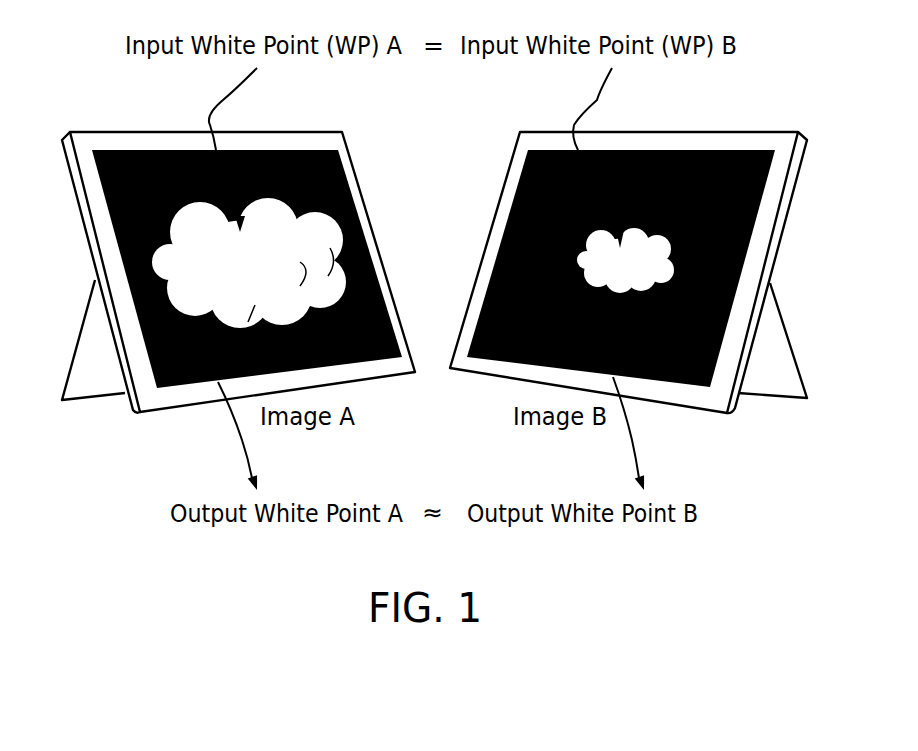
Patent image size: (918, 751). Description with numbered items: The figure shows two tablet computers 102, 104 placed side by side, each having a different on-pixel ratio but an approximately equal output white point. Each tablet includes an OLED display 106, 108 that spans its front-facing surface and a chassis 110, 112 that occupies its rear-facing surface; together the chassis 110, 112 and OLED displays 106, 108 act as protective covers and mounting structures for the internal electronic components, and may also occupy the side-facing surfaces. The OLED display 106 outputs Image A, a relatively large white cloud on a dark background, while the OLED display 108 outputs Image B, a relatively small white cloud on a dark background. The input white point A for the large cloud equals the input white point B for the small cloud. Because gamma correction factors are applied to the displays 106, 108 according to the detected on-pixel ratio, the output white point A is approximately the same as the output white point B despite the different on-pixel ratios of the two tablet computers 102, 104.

The tablet computer 102 is at (139, 97).
The tablet computer 104 is at (710, 106).
The OLED display 106 is at (195, 384).
The OLED display 108 is at (673, 383).
The chassis 110 is at (117, 131).
The chassis 112 is at (737, 129).